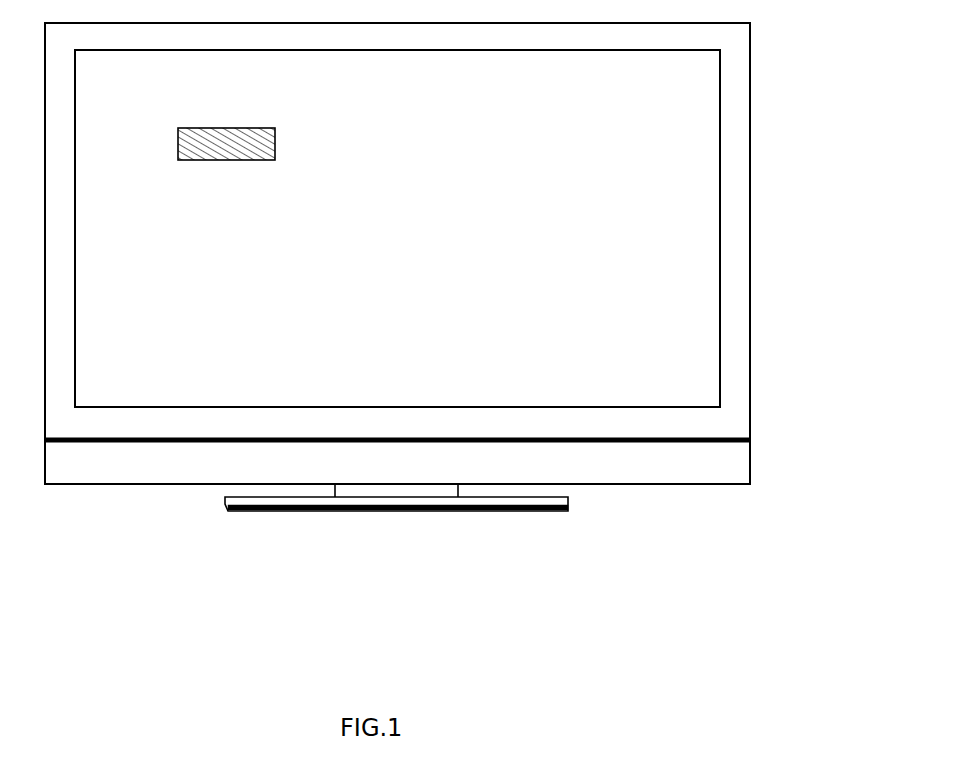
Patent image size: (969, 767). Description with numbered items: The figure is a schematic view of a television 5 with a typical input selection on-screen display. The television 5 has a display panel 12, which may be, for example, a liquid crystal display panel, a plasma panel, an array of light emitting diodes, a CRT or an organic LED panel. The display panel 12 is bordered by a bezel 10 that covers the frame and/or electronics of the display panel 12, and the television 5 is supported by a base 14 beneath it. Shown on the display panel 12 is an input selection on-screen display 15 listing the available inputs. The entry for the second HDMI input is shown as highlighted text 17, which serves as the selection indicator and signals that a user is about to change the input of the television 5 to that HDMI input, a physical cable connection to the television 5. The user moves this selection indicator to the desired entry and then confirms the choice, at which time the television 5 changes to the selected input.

The television 5 is at (852, 165).
The bezel 10 is at (718, 42).
The display panel 12 is at (687, 262).
The base 14 is at (553, 500).
The input selection on-screen display 15 is at (478, 184).
The highlighted text 17 is at (275, 138).